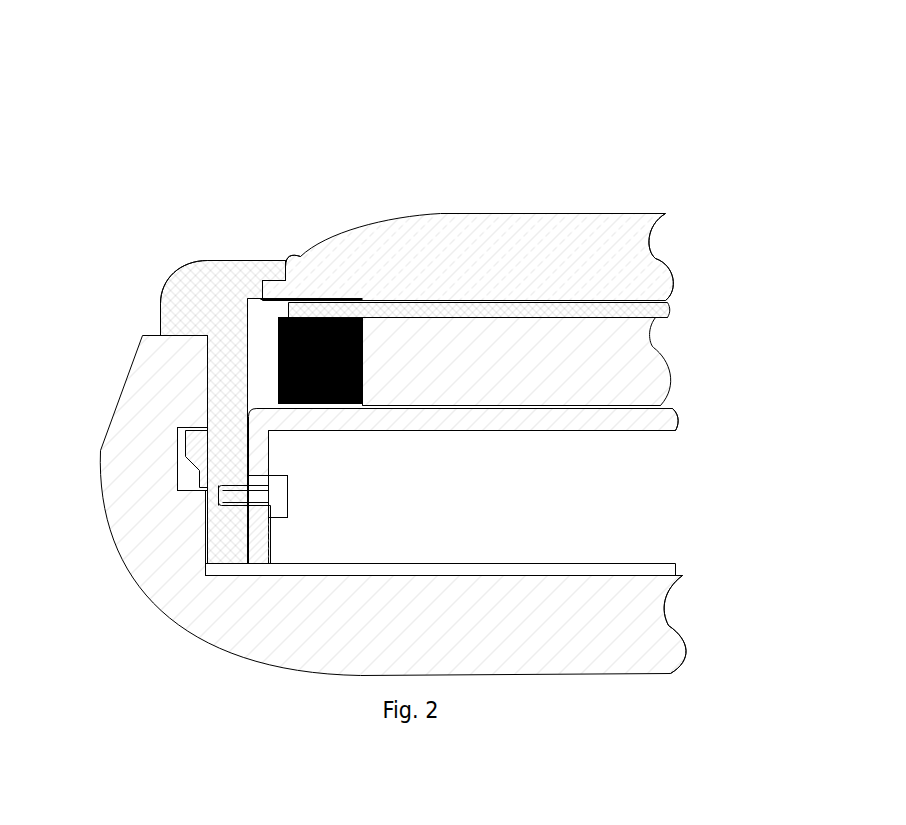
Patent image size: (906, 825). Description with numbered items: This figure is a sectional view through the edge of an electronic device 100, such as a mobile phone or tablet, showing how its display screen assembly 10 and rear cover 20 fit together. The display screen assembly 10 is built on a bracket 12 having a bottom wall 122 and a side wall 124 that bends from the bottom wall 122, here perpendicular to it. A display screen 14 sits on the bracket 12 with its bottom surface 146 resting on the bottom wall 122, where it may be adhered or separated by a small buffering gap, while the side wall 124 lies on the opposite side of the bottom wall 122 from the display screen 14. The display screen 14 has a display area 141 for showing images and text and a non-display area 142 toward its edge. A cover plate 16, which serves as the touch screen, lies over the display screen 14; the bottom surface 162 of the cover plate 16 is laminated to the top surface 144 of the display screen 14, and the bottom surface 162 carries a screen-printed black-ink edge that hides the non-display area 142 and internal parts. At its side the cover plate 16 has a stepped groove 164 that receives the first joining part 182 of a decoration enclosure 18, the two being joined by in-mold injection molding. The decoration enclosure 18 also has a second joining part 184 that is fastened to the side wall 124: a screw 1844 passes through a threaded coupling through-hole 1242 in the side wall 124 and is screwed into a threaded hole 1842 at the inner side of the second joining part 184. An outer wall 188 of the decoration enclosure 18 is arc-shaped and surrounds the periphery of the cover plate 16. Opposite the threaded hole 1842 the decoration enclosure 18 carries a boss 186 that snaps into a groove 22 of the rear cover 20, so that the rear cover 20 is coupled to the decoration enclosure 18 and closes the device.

The electronic device 100 is at (145, 53).
The display screen assembly 10 is at (527, 98).
The bracket 12 is at (476, 487).
The bottom wall 122 is at (670, 415).
The side wall 124 is at (263, 453).
The coupling through-hole 1242 is at (260, 508).
The display screen 14 is at (538, 361).
The display area 141 is at (495, 283).
The non-display area 142 is at (380, 283).
The top surface 144 is at (670, 325).
The bottom surface 146 is at (672, 388).
The cover plate 16 is at (518, 245).
The bottom surface 162 is at (673, 283).
The groove 164 is at (292, 258).
The decoration enclosure 18 is at (162, 400).
The first joining part 182 is at (258, 260).
The second joining part 184 is at (227, 533).
The threaded hole 1842 is at (218, 506).
The screw 1844 is at (201, 528).
The boss 186 is at (190, 426).
The outer wall 188 is at (208, 259).
The rear cover 20 is at (636, 637).
The groove 22 is at (140, 497).